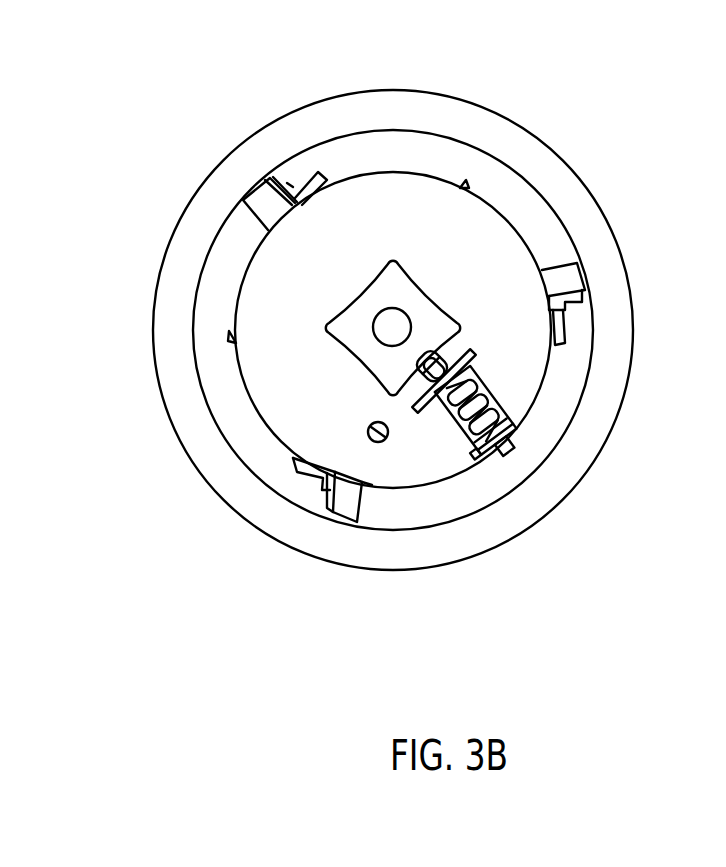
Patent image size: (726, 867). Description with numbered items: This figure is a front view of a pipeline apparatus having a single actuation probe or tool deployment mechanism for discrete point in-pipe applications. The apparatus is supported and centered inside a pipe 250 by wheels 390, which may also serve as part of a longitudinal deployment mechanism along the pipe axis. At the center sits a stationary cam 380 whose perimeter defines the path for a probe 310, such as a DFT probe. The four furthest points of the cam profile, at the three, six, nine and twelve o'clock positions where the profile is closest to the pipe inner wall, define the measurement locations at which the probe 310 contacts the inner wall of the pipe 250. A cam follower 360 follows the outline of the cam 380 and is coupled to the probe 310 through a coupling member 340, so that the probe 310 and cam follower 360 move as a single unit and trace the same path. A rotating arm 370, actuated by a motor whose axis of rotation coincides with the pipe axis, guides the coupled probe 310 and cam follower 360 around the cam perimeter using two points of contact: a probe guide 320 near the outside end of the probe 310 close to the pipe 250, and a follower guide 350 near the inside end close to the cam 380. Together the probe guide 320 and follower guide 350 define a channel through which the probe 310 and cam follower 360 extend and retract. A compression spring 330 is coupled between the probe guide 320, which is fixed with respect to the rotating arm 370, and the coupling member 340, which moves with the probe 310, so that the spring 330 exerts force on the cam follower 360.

The pipe 250 is at (520, 505).
The probe 310 is at (510, 447).
The probe guide 320 is at (490, 447).
The spring 330 is at (490, 400).
The coupling member 340 is at (465, 382).
The follower guide 350 is at (420, 412).
The cam follower 360 is at (443, 340).
The rotating arm 370 is at (492, 402).
The cam 380 is at (387, 290).
The wheels 390 is at (258, 192).